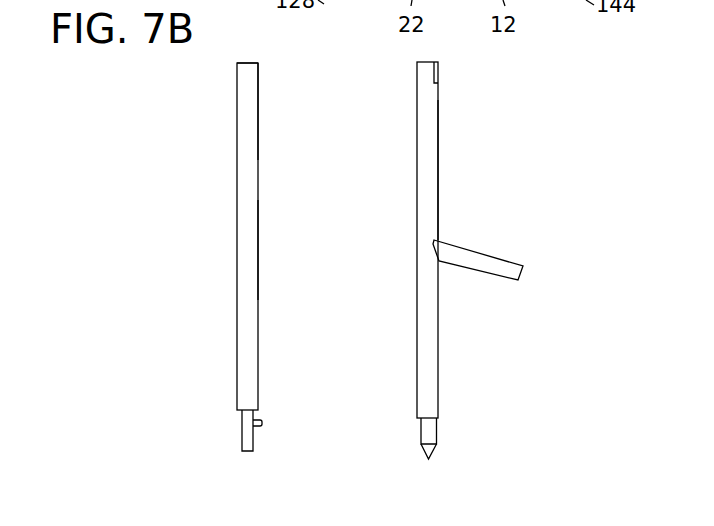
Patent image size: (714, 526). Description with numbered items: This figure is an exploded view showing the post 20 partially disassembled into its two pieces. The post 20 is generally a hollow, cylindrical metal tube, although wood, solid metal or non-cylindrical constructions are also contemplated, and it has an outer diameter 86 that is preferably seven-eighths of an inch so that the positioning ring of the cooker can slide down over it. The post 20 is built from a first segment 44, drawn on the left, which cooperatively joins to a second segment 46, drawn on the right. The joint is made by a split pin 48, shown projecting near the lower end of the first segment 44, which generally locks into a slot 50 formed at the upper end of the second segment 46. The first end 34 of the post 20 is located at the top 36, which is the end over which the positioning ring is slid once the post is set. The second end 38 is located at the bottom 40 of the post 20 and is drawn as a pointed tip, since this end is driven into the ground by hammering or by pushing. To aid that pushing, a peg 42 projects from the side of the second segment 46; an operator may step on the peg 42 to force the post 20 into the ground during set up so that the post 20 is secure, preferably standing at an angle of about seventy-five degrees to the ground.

The post 20 is at (243, 196).
The top 36 is at (238, 63).
The first end 34 is at (258, 81).
The outer diameter 86 is at (257, 132).
The first segment 44 is at (257, 250).
The split pin 48 is at (257, 420).
The slot 50 is at (438, 71).
The second segment 46 is at (438, 167).
The peg 42 is at (487, 252).
The second end 38 is at (422, 439).
The bottom 40 is at (430, 456).